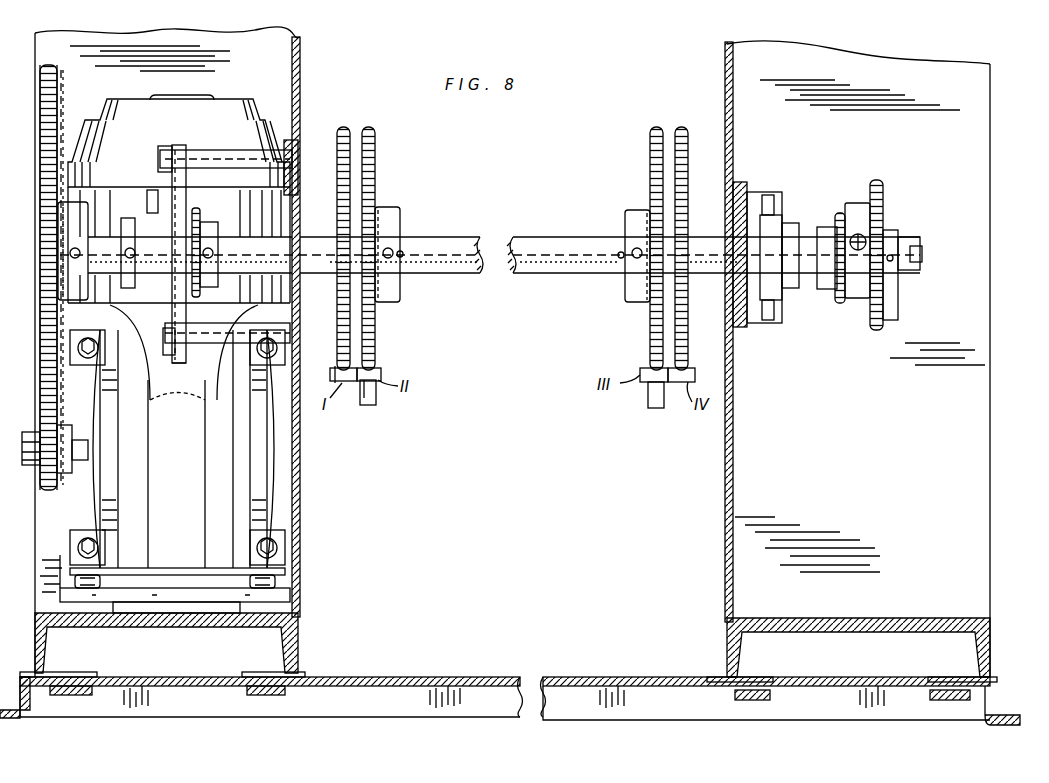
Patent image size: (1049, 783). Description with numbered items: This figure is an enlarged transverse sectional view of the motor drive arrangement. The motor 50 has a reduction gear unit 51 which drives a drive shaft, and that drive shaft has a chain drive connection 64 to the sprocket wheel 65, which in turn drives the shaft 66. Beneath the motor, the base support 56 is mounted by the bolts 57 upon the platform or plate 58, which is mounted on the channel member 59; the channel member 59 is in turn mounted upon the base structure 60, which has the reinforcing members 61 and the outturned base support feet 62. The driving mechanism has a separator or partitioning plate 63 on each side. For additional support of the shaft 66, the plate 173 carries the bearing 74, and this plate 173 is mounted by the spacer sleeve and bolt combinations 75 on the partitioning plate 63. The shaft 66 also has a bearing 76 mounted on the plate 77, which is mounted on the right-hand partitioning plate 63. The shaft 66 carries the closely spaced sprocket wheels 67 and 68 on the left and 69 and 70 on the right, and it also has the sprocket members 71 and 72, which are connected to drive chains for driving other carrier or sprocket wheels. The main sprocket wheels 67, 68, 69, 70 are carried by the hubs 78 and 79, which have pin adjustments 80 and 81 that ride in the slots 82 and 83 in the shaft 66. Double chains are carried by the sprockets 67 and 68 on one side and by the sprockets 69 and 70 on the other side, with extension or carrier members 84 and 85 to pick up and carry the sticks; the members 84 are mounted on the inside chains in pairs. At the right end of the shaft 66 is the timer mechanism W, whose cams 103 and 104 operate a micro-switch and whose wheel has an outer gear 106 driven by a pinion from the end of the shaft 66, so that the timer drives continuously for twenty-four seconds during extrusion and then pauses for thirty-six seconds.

The motor 50 is at (179, 199).
The reduction gear unit 51 is at (228, 443).
The base support 56 is at (177, 578).
The bolts 57 is at (100, 581).
The platform or plate 58 is at (182, 608).
The channel member 59 is at (285, 626).
The base structure 60 is at (442, 677).
The reinforcing members 61 is at (72, 697).
The outturned base support feet 62 is at (14, 712).
The separator or partitioning plate 63 is at (300, 418).
The chain drive connection 64 is at (45, 312).
The sprocket wheel 65 is at (52, 66).
The shaft 66 is at (283, 248).
The sprocket wheel 67 is at (341, 127).
The sprocket wheel 68 is at (377, 155).
The sprocket wheel 69 is at (650, 137).
The sprocket wheel 70 is at (688, 152).
The sprocket member 71 is at (204, 222).
The sprocket member 72 is at (840, 213).
The bearing 74 is at (144, 233).
The spacer sleeve and bolt combinations 75 is at (266, 165).
The bearing 76 is at (770, 210).
The plate 77 is at (742, 182).
The hub 78 is at (397, 222).
The hub 79 is at (636, 212).
The pin adjustment 80 is at (393, 250).
The pin adjustment 81 is at (634, 248).
The slot 82 is at (402, 262).
The slot 83 is at (620, 258).
The extension or carrier members 84 is at (368, 405).
The extension or carrier members 85 is at (653, 408).
The cam 103 is at (860, 203).
The cam 104 is at (896, 300).
The outer gear 106 is at (882, 180).
The plate 173 is at (178, 365).
The timer mechanism W is at (910, 236).